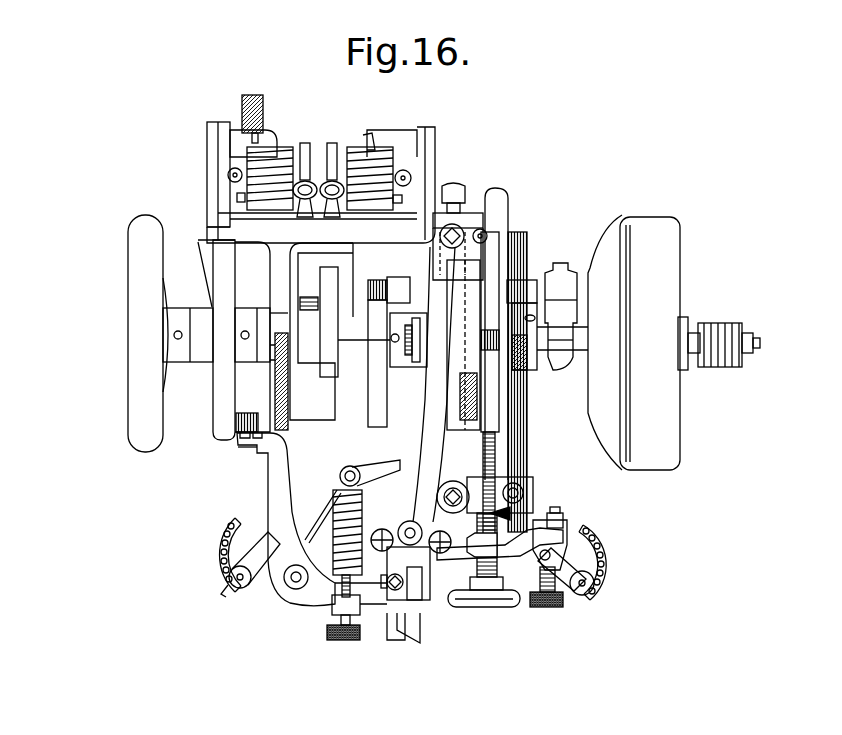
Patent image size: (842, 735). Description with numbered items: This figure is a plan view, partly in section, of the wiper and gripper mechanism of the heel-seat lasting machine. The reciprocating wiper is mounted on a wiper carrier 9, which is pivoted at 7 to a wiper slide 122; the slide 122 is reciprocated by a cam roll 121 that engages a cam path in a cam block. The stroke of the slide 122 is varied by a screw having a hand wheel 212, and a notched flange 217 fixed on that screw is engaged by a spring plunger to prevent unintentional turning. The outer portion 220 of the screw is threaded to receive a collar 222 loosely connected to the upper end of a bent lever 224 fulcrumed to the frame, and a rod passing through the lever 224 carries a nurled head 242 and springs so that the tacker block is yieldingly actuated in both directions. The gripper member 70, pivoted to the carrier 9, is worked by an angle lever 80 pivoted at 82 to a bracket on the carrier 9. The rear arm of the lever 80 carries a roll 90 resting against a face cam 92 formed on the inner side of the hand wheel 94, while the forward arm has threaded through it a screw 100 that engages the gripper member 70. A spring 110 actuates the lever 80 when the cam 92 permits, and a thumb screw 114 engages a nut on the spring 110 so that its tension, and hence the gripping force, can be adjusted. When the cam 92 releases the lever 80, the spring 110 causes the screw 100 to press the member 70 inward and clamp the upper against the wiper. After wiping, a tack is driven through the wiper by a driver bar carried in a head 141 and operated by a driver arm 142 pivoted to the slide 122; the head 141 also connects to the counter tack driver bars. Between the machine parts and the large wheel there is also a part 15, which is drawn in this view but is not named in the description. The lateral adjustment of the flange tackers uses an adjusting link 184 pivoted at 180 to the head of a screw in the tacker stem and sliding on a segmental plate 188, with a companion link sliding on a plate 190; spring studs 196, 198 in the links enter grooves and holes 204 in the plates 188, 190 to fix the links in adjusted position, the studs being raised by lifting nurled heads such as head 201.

The pivot 7 is at (427, 261).
The wiper carrier 9 is at (427, 403).
The wheel plate 15 is at (582, 352).
The gripper member 70 is at (412, 590).
The angle lever 80 is at (275, 480).
The pivot 82 is at (293, 583).
The roll 90 is at (237, 433).
The face cam 92 is at (225, 397).
The hand wheel 94 is at (140, 343).
The screw 100 is at (407, 640).
The spring 110 is at (336, 494).
The thumb screw 114 is at (335, 640).
The cam roll 121 is at (465, 405).
The wiper slide 122 is at (505, 453).
The head 141 is at (441, 553).
The driver arm 142 is at (440, 453).
The pivot 180 is at (537, 567).
The adjusting link 184 is at (562, 578).
The segmental plate 188 is at (598, 567).
The segmental plate 190 is at (227, 530).
The spring stud 196 is at (584, 583).
The spring stud 198 is at (232, 585).
The nurled head 201 is at (233, 573).
The holes 204 is at (225, 553).
The hand wheel 212 is at (480, 607).
The flange 217 is at (518, 506).
The outer portion of the screw 220 is at (497, 582).
The collar 222 is at (487, 540).
The bent lever 224 is at (563, 530).
The nurled head 242 is at (558, 607).